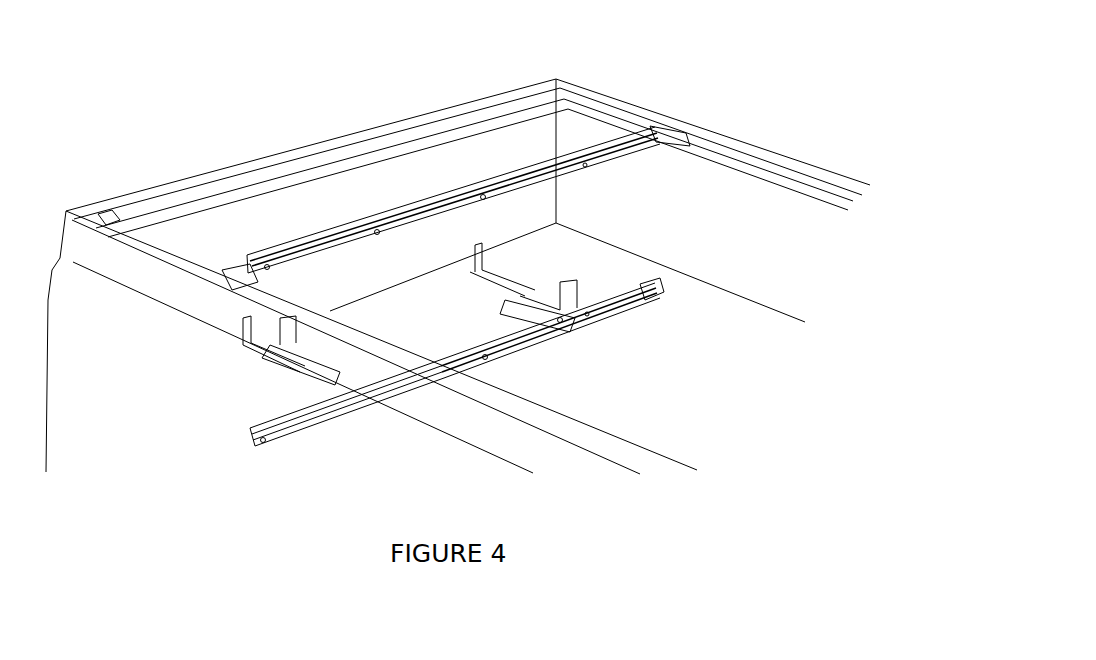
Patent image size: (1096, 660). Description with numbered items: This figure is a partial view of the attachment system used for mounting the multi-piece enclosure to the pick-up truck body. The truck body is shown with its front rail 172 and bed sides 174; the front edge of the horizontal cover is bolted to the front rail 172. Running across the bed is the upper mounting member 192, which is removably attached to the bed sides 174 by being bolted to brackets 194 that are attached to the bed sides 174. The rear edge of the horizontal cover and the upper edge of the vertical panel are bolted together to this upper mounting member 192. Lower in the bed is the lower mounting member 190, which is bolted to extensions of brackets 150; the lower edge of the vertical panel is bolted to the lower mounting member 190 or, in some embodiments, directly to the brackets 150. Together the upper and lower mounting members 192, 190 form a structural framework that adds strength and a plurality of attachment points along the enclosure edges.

The brackets 150 is at (487, 294).
The front rail 172 is at (190, 180).
The bed sides 174 is at (826, 196).
The lower mounting member 190 is at (636, 296).
The upper mounting member 192 is at (580, 170).
The brackets 194 is at (655, 132).